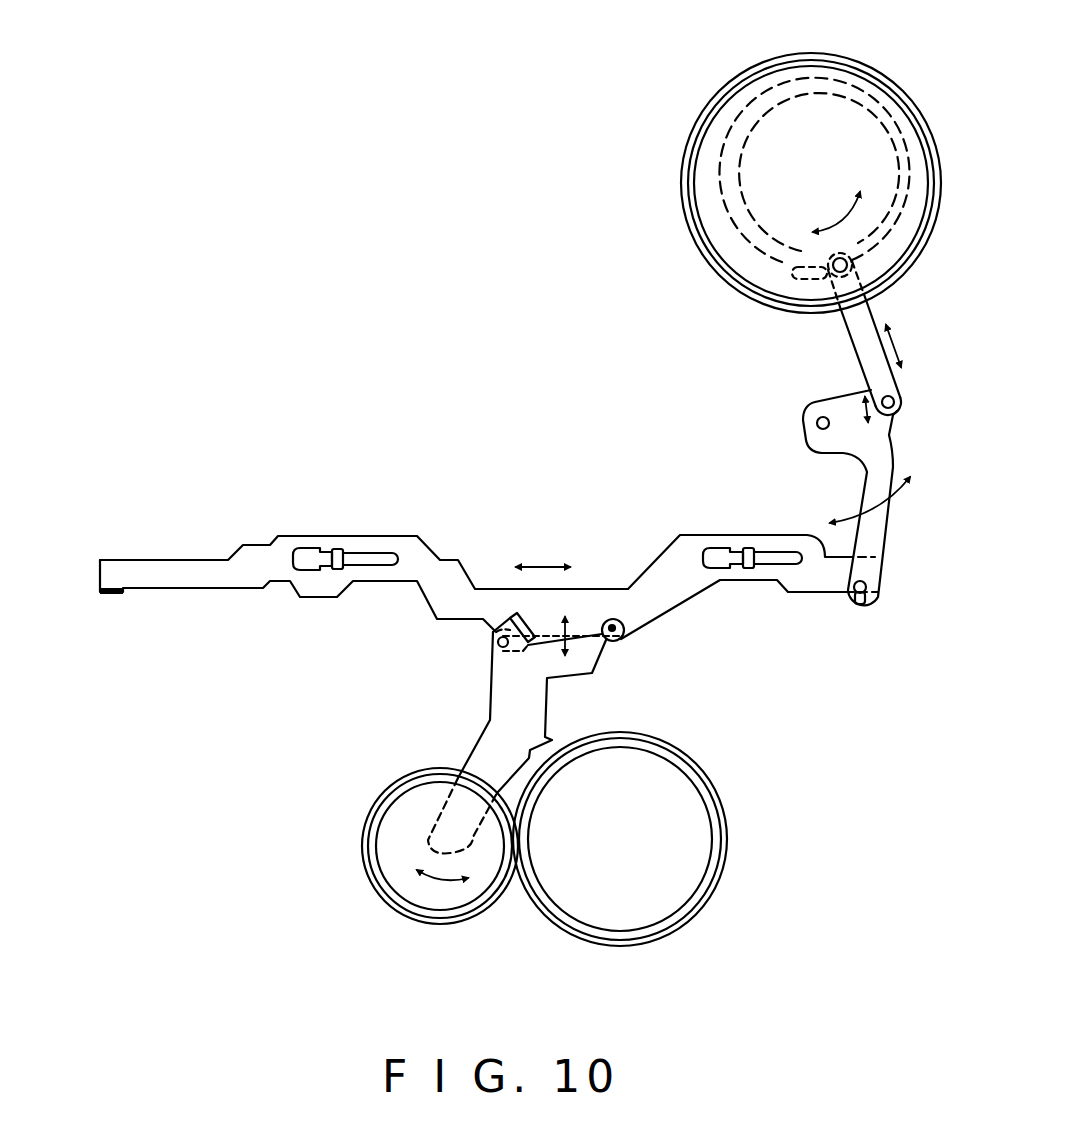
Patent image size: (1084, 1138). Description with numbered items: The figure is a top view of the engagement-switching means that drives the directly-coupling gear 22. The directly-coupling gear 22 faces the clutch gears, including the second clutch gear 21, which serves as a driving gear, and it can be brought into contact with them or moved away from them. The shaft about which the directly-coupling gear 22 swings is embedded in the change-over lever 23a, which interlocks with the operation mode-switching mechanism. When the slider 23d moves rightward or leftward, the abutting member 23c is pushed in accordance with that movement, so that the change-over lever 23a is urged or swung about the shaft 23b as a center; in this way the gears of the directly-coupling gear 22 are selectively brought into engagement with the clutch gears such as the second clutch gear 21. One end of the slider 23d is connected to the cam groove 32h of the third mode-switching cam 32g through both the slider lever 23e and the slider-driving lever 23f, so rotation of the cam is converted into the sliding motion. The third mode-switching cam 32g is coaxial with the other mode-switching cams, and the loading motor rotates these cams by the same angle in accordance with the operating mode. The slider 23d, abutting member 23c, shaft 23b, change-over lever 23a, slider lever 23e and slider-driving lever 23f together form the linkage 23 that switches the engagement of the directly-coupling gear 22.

The third mode-switching cam 32g is at (730, 255).
The cam groove 32h is at (866, 270).
The slider-driving lever 23f is at (852, 345).
The slider lever 23e is at (852, 480).
The rack plate 23 is at (489, 583).
The slider 23d is at (683, 595).
The abutting member 23c is at (495, 648).
The shaft 23b is at (626, 645).
The change-over lever 23a is at (495, 697).
The directly-coupling gear 22 is at (386, 852).
The second clutch gear 21 is at (700, 848).